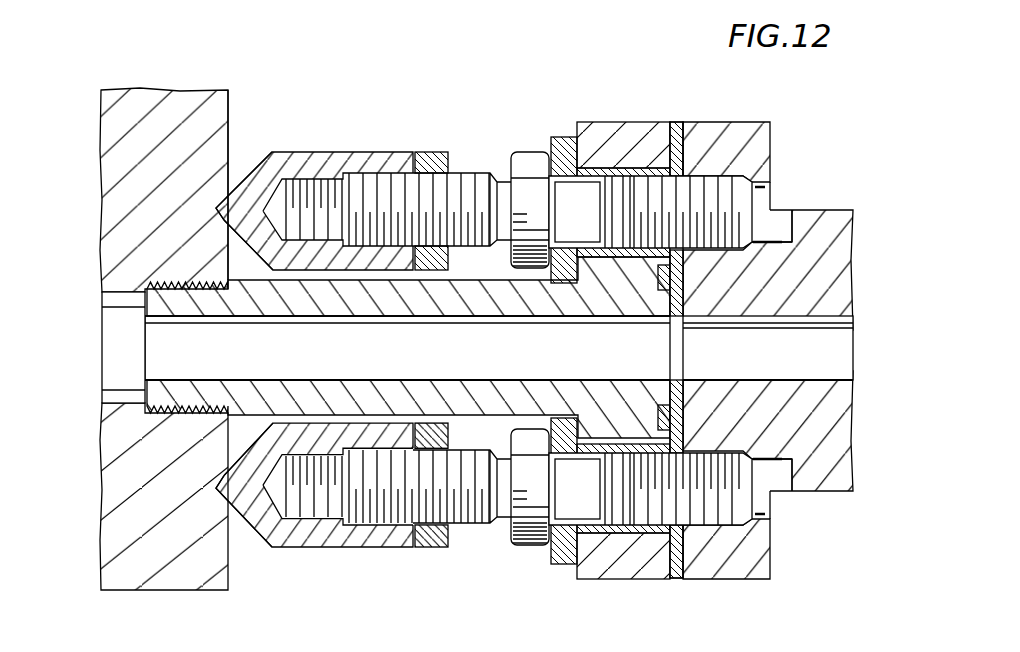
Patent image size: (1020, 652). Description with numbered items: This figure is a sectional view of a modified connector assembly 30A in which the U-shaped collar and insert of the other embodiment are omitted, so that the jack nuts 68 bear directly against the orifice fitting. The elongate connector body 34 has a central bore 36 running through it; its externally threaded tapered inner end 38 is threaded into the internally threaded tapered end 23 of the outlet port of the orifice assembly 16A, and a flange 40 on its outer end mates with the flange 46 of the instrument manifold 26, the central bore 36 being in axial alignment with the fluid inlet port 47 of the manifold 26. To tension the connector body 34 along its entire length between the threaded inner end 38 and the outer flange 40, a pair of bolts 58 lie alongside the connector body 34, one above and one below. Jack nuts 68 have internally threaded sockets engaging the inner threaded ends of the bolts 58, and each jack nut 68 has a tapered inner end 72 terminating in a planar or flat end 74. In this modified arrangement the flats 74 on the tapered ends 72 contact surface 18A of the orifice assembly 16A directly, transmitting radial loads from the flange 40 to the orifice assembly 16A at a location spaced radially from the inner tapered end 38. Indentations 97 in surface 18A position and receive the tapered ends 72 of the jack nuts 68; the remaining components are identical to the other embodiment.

The orifice assembly 16A is at (229, 104).
The surface of orifice assembly 18A is at (192, 168).
The internally threaded tapered end 23 is at (208, 290).
The manifold 26 is at (777, 141).
The modified connector assembly 30A is at (394, 143).
The connector body 34 is at (393, 317).
The central bore 36 is at (309, 366).
The externally threaded tapered inner end 38 is at (172, 414).
The flange 40 is at (594, 121).
The flange of manifold 46 is at (723, 121).
The fluid inlet port 47 is at (745, 323).
The bolts 58 is at (477, 170).
The jack nuts 68 is at (341, 151).
The tapered inner ends 72 is at (250, 170).
The planar or flat end 74 is at (218, 214).
The indentations 97 is at (226, 198).